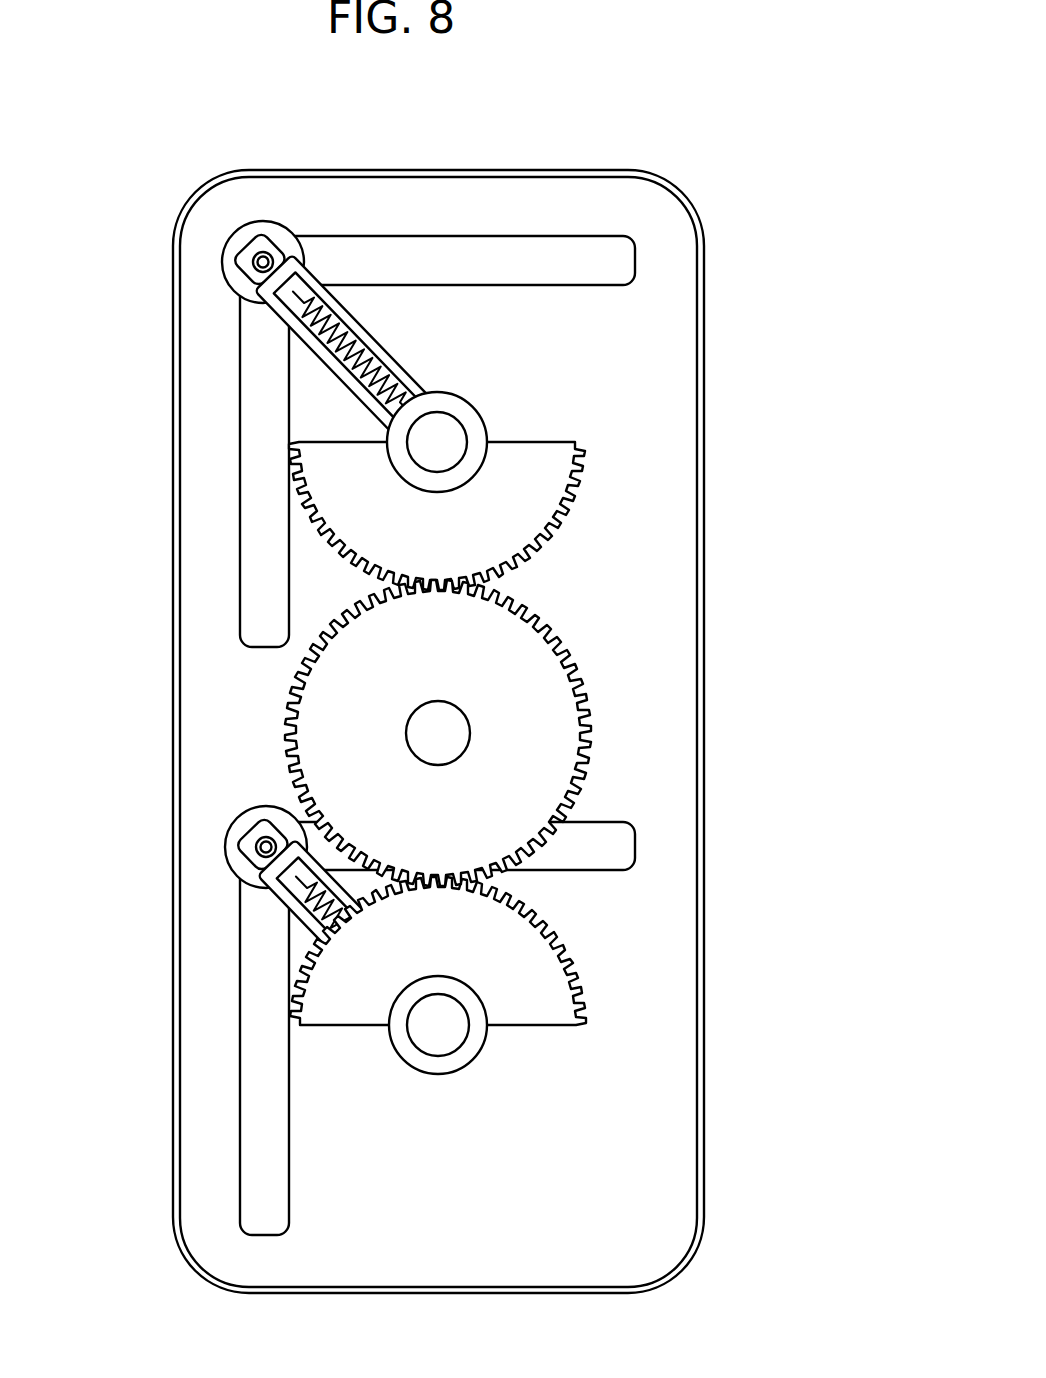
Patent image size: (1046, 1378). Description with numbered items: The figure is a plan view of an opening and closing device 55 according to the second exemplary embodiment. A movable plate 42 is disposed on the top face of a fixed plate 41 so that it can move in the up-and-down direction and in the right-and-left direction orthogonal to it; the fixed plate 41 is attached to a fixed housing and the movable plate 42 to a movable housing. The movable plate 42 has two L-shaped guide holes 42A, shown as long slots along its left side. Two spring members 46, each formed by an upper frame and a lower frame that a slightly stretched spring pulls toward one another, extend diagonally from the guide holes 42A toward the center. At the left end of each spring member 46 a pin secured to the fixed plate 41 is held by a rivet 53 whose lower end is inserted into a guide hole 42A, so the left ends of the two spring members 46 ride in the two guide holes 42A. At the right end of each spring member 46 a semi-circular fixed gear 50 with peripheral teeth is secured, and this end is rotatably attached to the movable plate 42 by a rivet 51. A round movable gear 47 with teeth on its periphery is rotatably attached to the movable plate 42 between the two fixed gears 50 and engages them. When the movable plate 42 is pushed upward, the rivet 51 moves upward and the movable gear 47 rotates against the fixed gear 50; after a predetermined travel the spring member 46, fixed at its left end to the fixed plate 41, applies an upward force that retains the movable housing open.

The fixed plate 41 is at (645, 333).
The movable plate 42 is at (420, 708).
The guide holes 42A is at (170, 748).
The spring member 46 is at (338, 348).
The movable gear 47 is at (523, 702).
The fixed gear 50 is at (527, 507).
The rivet 51 is at (455, 436).
The rivet 53 is at (245, 227).
The opening and closing device 55 is at (193, 1273).